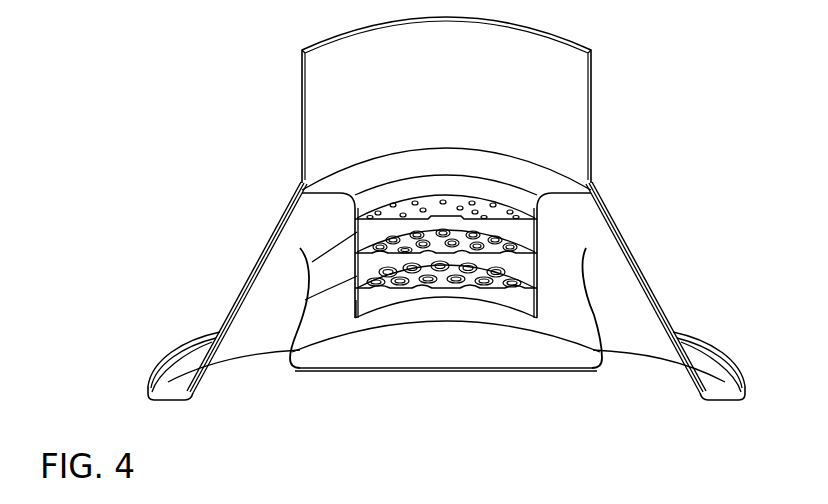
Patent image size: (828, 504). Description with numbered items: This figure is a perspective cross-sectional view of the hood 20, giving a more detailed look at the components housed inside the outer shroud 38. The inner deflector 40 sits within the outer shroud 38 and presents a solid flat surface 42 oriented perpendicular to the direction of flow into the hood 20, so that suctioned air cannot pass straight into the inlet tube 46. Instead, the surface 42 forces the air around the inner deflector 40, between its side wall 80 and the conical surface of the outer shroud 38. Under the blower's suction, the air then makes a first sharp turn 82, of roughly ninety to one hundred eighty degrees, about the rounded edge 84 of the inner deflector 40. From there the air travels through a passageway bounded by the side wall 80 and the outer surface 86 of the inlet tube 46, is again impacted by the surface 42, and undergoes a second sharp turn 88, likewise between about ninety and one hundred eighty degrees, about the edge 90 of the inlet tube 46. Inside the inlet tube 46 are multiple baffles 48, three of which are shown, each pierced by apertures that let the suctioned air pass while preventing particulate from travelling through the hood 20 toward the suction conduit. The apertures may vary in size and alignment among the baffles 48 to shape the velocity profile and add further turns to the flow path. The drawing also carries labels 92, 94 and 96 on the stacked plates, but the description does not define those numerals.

The hood 20 is at (644, 76).
The outer shroud 38 is at (649, 289).
The inner deflector 40 is at (599, 334).
The solid flat surface 42 is at (443, 370).
The inlet tube 46 is at (537, 307).
The baffles 48 is at (532, 288).
The side wall 80 is at (302, 318).
The first sharp turn 82 is at (590, 252).
The rounded edge 84 is at (310, 262).
The outer surface 86 is at (357, 232).
The second sharp turn 88 is at (528, 326).
The edge 90 is at (356, 300).
The third plate 92 is at (357, 290).
The second plate lower edge 94 is at (357, 258).
The first plate upper edge 96 is at (357, 216).